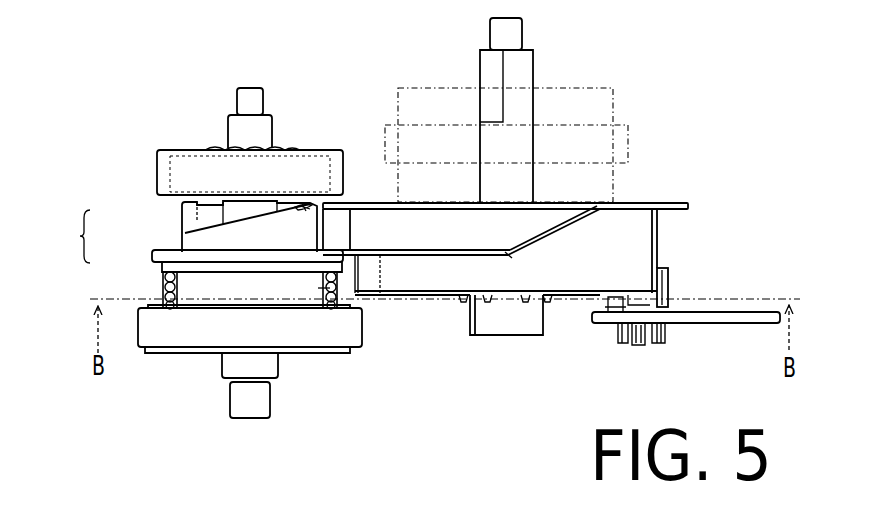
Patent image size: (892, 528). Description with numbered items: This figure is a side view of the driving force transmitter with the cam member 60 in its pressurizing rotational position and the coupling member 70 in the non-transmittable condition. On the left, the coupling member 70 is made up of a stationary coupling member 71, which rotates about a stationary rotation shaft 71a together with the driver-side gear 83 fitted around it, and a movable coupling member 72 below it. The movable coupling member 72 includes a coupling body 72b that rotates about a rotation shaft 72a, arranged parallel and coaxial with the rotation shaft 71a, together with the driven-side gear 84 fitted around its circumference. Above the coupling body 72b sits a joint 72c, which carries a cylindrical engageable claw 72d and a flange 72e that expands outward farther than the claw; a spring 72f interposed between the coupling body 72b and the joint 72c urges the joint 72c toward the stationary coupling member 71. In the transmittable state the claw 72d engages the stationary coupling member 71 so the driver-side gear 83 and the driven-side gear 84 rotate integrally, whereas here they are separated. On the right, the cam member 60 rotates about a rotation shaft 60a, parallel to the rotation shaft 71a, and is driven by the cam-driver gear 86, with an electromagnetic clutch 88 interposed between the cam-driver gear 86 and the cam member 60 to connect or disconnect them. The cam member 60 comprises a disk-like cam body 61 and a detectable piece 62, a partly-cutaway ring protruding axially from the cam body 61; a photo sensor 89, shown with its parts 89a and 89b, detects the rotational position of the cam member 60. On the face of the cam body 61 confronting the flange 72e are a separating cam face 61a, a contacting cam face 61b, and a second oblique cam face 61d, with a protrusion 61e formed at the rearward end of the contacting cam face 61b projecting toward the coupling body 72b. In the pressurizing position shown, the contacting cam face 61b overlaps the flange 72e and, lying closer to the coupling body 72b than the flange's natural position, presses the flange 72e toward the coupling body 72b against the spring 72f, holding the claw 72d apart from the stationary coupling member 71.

The cam member 60 is at (502, 357).
The rotation shaft 60a is at (522, 38).
The cam body 61 is at (523, 226).
The separating cam face 61a is at (659, 214).
The contacting cam face 61b is at (405, 254).
The second oblique cam face 61d is at (572, 230).
The protrusion 61e is at (506, 256).
The detectable piece 62 is at (565, 297).
The coupling member 70 is at (188, 379).
The stationary coupling member 71 is at (185, 150).
The rotation shaft 71a is at (265, 100).
The movable coupling member 72 is at (128, 292).
The rotation shaft 72a is at (270, 405).
The coupling body 72b is at (335, 290).
The joint 72c is at (66, 236).
The engageable claw 72d is at (182, 233).
The flange 72e is at (152, 256).
The spring 72f is at (165, 285).
The driver-side gear 83 is at (157, 172).
The driven-side gear 84 is at (365, 348).
The cam-driver gear 86 is at (628, 140).
The electromagnetic clutch 88 is at (613, 105).
The photo sensor 89 is at (672, 332).
The connector terminal 89a is at (610, 299).
The connector wall 89b is at (670, 285).